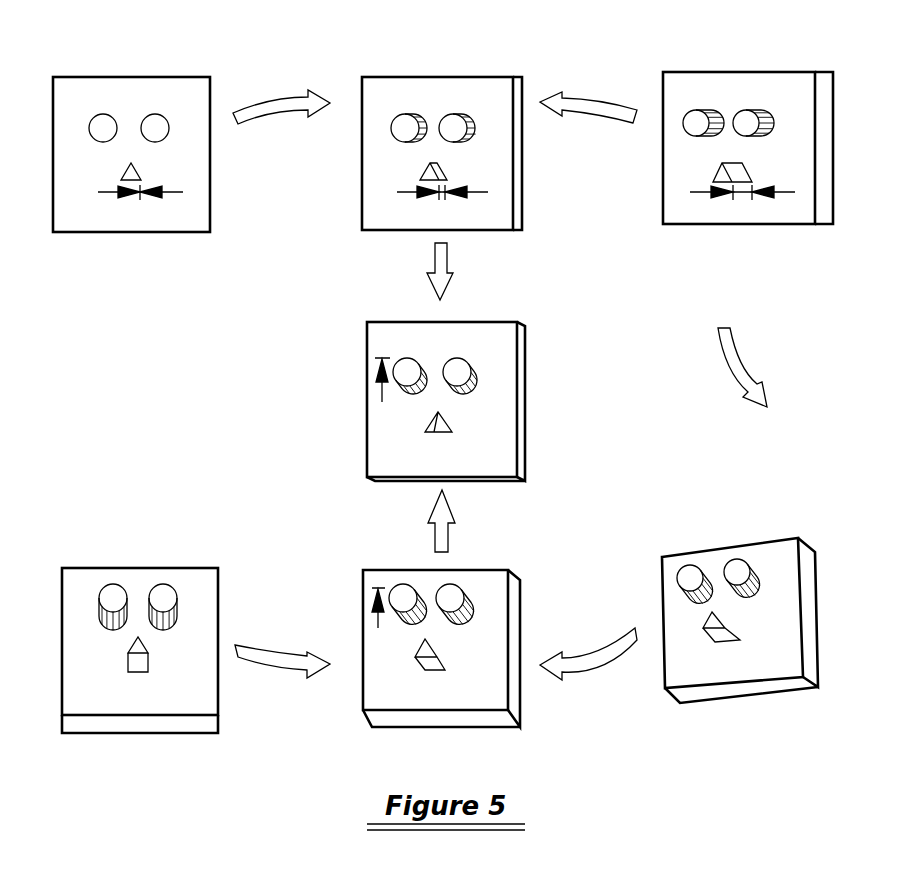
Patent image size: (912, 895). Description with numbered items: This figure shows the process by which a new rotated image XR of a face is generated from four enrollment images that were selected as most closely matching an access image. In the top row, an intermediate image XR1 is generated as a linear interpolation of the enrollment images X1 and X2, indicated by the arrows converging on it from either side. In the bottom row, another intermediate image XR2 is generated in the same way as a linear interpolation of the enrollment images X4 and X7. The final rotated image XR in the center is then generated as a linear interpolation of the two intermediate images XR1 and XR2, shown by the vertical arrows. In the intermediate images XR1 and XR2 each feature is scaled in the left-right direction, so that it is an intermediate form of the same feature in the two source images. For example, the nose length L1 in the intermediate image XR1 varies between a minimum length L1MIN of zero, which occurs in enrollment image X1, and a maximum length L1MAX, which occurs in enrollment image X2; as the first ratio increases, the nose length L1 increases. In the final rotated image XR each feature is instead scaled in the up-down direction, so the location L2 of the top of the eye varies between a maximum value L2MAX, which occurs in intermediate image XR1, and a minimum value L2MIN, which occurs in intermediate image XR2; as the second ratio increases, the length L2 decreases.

The enrollment image X1 is at (182, 77).
The intermediate image XR1 is at (497, 77).
The enrollment image X2 is at (800, 72).
The final rotated image XR is at (498, 322).
The enrollment image X4 is at (185, 568).
The intermediate image XR2 is at (488, 570).
The enrollment image X7 is at (770, 538).
The minimum nose length L1MIN is at (98, 192).
The nose length L1 is at (397, 192).
The maximum nose length L1MAX is at (690, 192).
The maximum eye-top location L2MAX is at (381, 77).
The eye-top location L2 is at (381, 322).
The minimum eye-top location L2MIN is at (378, 570).